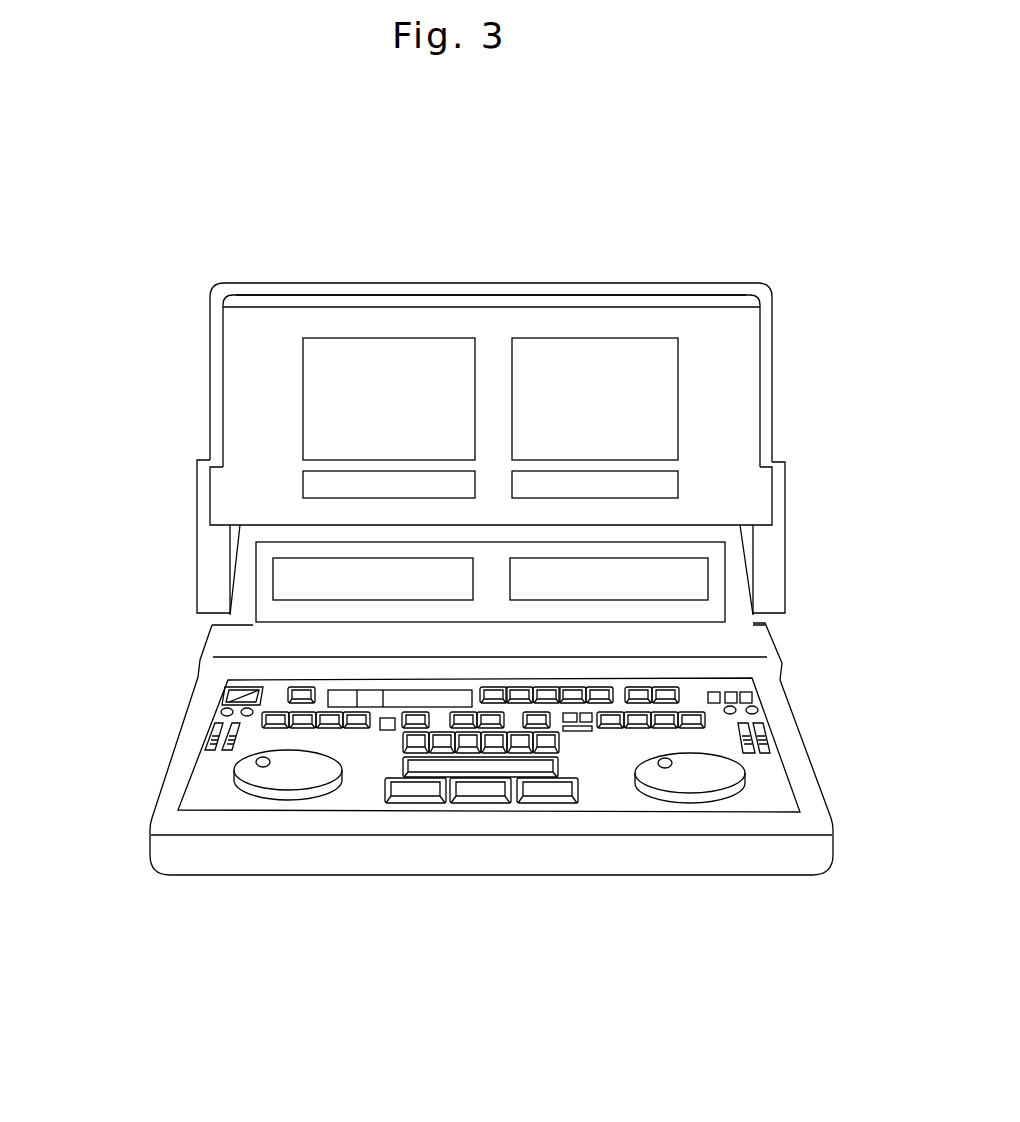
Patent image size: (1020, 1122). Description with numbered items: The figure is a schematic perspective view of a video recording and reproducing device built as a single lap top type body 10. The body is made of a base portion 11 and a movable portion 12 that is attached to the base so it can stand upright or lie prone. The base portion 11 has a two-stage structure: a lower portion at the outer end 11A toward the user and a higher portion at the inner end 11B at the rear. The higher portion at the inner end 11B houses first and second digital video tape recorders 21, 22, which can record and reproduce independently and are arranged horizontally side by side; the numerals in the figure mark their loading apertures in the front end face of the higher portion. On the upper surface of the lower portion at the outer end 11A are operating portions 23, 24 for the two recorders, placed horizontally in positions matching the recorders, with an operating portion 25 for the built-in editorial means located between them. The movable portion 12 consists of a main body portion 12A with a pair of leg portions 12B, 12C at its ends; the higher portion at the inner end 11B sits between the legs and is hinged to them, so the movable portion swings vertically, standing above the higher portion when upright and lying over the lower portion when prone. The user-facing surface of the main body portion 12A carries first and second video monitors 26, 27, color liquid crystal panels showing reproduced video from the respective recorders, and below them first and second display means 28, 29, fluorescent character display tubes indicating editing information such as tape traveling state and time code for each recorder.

The lap top type body 10 is at (138, 433).
The base portion 11 is at (198, 728).
The lower portion at the outer end 11A is at (542, 825).
The higher portion at the inner end 11B is at (737, 613).
The movable portion 12 is at (210, 437).
The main body portion 12A is at (733, 338).
The leg portion 12B is at (205, 558).
The leg portion 12C is at (767, 540).
The first digital video tape recorder 21 is at (293, 579).
The second digital video tape recorder 22 is at (687, 580).
The operating portion 23 is at (182, 763).
The operating portion 24 is at (772, 715).
The operating portion for editorial means 25 is at (443, 813).
The first video monitor 26 is at (382, 365).
The second video monitor 27 is at (588, 365).
The first display means 28 is at (325, 480).
The second display means 29 is at (663, 482).